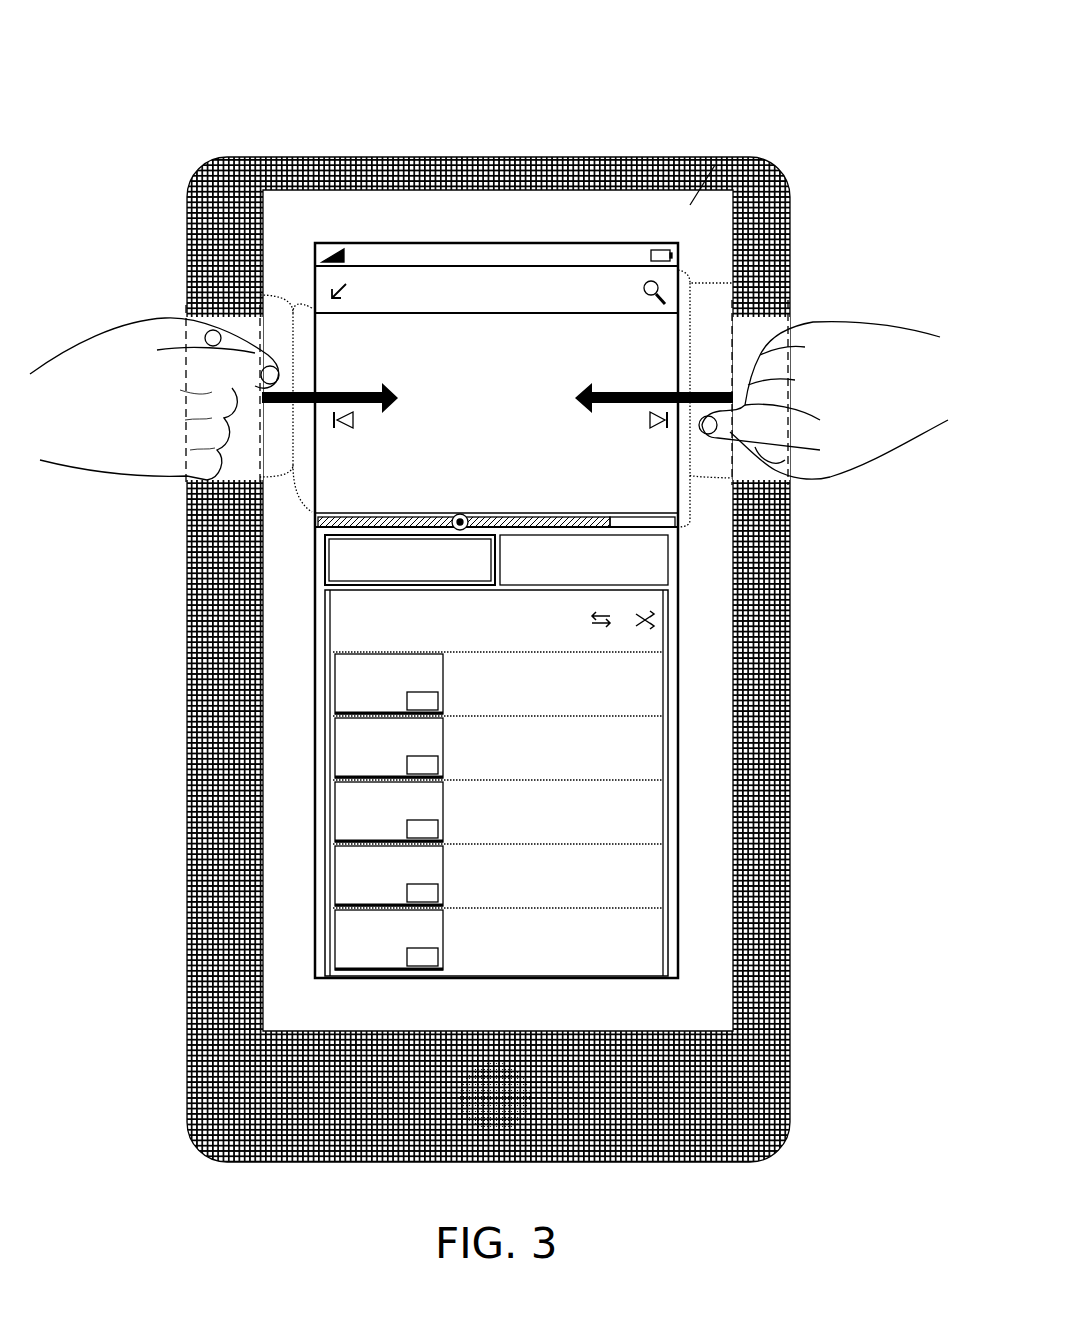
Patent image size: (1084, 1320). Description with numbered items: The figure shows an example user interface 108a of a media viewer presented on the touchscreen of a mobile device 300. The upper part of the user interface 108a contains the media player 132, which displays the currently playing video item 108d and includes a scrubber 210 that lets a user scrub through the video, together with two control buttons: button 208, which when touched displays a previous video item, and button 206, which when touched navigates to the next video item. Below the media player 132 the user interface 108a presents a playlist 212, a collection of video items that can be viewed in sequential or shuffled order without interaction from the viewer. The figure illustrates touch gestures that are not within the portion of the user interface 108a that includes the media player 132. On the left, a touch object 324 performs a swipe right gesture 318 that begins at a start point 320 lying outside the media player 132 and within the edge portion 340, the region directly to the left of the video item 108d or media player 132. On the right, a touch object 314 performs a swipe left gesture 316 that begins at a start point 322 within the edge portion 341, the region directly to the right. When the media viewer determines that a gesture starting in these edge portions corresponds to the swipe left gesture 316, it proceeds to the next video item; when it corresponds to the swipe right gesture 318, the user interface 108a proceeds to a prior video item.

The mobile device 300 is at (252, 76).
The user interface 108a is at (715, 165).
The media player 132 is at (700, 332).
The video item 108d is at (285, 478).
The edge portion 340 is at (282, 293).
The edge portion 341 is at (700, 278).
The swipe right gesture 318 is at (350, 383).
The swipe left gesture 316 is at (642, 385).
The touch object 324 is at (95, 417).
The touch object 314 is at (827, 417).
The start point 320 is at (278, 367).
The start point 322 is at (708, 432).
The button 208 is at (457, 453).
The button 206 is at (650, 420).
The scrubber 210 is at (528, 478).
The playlist 212 is at (595, 601).